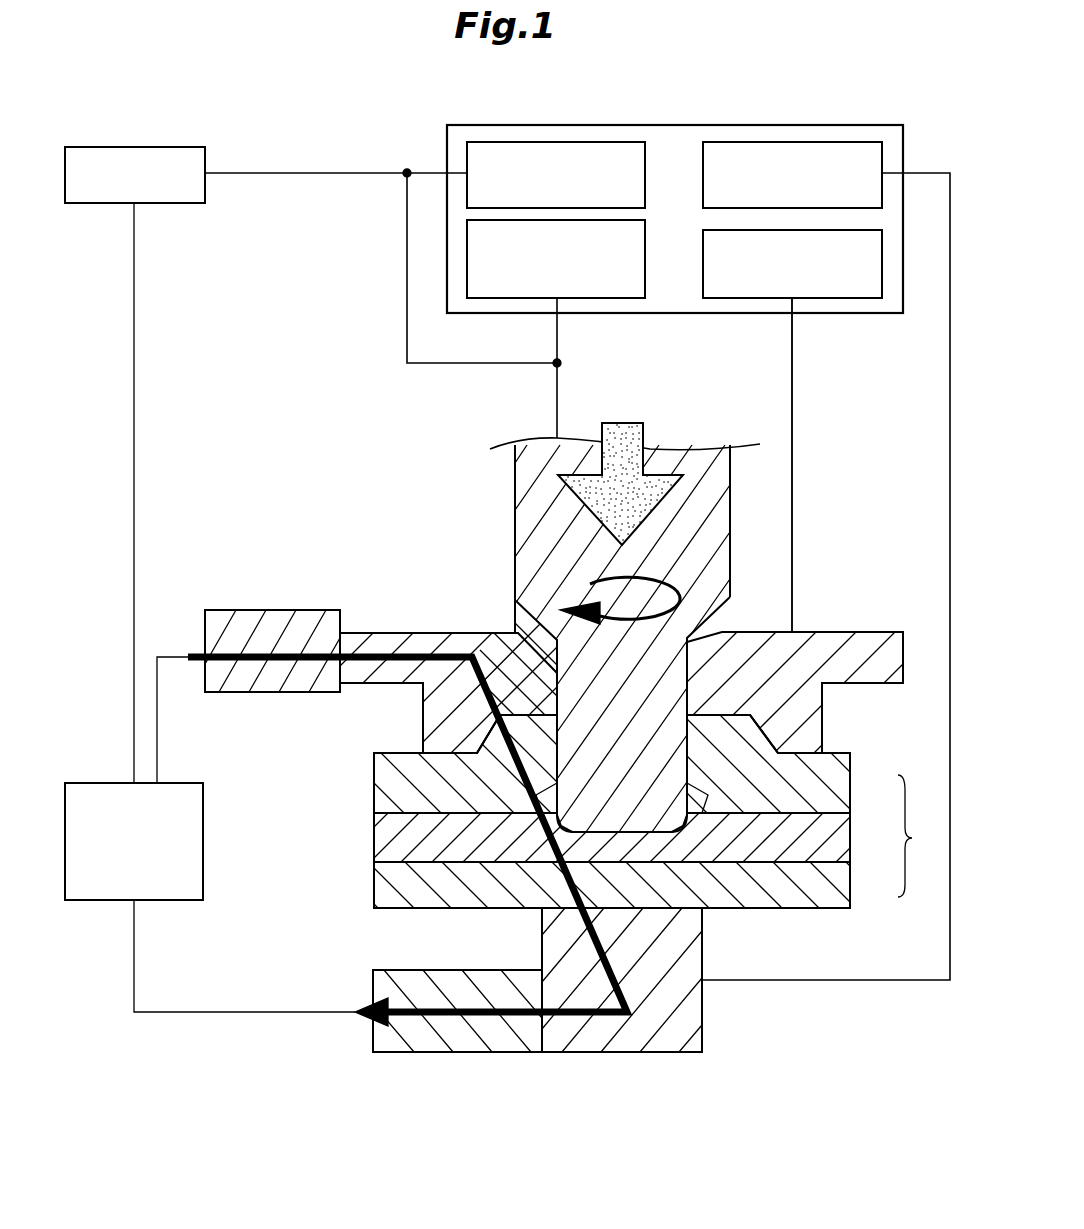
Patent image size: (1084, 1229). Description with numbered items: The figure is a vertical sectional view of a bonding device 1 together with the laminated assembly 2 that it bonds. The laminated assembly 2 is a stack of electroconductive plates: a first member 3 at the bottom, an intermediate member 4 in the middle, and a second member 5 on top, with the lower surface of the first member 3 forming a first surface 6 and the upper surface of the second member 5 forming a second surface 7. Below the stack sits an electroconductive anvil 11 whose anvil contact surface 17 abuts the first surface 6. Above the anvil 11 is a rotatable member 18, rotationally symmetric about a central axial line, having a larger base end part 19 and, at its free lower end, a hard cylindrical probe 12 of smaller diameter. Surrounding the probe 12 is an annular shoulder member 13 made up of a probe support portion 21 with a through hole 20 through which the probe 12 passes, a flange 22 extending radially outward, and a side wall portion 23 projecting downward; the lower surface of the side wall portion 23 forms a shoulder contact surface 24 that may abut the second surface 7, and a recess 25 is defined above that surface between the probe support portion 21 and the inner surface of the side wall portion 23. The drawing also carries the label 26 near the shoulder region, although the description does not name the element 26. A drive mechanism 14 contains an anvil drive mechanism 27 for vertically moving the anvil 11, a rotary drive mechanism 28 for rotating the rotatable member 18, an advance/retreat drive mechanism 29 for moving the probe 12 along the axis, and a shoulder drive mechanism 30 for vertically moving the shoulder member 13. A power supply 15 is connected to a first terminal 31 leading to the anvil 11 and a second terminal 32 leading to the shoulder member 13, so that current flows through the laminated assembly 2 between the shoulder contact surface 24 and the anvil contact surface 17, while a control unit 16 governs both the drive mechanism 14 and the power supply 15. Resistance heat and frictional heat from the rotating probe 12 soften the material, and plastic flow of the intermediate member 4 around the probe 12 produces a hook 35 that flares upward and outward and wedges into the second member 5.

The bonding device 1 is at (112, 455).
The laminated assembly 2 is at (916, 836).
The first member 3 is at (830, 880).
The intermediate member 4 is at (830, 835).
The second member 5 is at (828, 787).
The first surface 6 is at (823, 910).
The second surface 7 is at (838, 751).
The anvil 11 is at (724, 1040).
The probe 12 is at (690, 637).
The shoulder member 13 is at (892, 588).
The drive mechanism 14 is at (495, 125).
The power supply 15 is at (102, 783).
The control unit 16 is at (117, 147).
The anvil contact surface 17 is at (697, 904).
The rotatable member 18 is at (702, 440).
The base end part 19 is at (715, 515).
The through hole 20 is at (540, 650).
The probe support portion 21 is at (715, 697).
The flange 22 is at (830, 643).
The side wall portion 23 is at (793, 728).
The shoulder contact surface 24 is at (440, 772).
The recess 25 is at (490, 740).
The electrode tip 26 is at (517, 710).
The anvil drive mechanism 27 is at (841, 142).
The rotary drive mechanism 28 is at (590, 142).
The advance/retreat drive mechanism 29 is at (618, 298).
The shoulder drive mechanism 30 is at (852, 298).
The first terminal 31 is at (483, 1052).
The second terminal 32 is at (245, 612).
The hook 35 is at (520, 808).